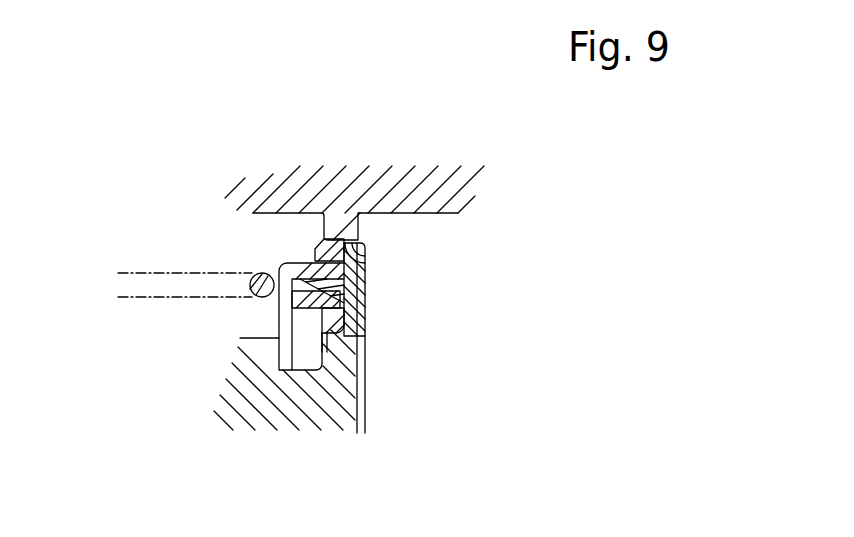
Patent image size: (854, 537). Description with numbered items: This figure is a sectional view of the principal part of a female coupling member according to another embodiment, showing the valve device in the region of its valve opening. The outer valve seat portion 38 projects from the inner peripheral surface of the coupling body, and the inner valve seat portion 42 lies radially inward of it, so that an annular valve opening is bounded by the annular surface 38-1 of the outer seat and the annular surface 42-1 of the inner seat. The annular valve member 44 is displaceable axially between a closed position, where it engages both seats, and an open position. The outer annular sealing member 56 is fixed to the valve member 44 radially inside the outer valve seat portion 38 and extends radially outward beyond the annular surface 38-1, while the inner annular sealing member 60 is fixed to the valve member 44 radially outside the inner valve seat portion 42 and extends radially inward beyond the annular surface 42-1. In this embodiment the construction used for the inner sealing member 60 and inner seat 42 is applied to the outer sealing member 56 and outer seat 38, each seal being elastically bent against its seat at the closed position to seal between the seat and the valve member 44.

The outer valve seat portion 38 is at (352, 233).
The annular surface of the outer valve seat portion 38-1 is at (368, 263).
The outer annular sealing member 56 is at (345, 272).
The annular valve member 44 is at (353, 303).
The annular surface of the inner valve seat portion 42-1 is at (367, 310).
The inner annular sealing member 60 is at (345, 362).
The inner valve seat portion 42 is at (327, 402).